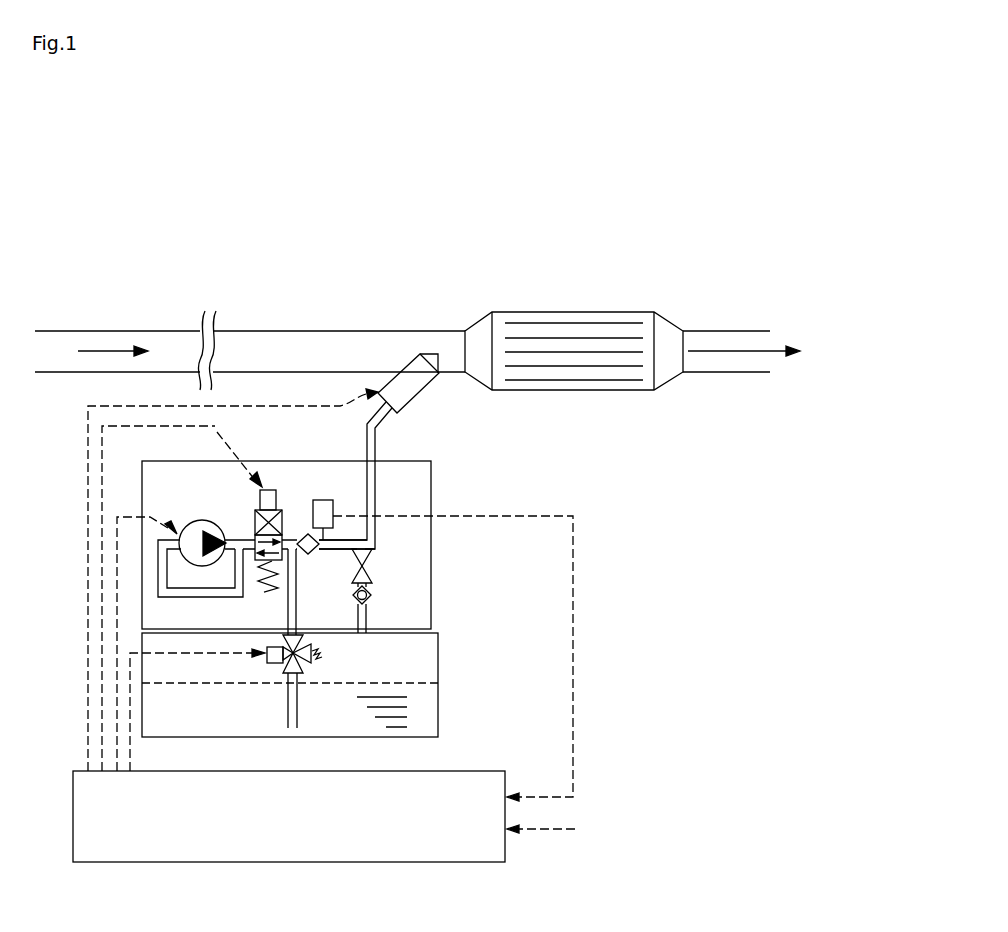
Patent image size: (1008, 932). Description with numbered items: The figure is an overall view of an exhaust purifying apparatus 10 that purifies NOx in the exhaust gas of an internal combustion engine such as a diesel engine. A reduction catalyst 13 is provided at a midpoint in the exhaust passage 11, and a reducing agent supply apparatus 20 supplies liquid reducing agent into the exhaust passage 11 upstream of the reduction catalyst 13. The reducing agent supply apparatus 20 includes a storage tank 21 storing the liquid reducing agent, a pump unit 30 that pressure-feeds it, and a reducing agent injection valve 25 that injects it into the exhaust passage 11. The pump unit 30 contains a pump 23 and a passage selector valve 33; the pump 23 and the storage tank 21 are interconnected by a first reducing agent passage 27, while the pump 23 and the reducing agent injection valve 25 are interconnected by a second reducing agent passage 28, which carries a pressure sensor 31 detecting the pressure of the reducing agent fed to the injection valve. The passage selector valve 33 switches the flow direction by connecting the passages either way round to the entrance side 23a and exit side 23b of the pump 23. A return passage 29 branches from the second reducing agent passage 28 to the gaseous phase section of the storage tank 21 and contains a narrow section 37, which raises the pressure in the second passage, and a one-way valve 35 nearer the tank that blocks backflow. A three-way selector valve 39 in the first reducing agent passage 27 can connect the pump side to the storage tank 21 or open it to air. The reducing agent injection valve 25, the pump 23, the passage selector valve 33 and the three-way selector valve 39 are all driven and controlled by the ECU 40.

The exhaust purifying apparatus 10 is at (666, 206).
The exhaust passage 11 is at (341, 331).
The reduction catalyst 13 is at (578, 320).
The reducing agent supply apparatus 20 is at (553, 451).
The storage tank 21 is at (438, 705).
The pump 23 is at (205, 520).
The entrance side of the pump 23a is at (233, 600).
The exit side of the pump 23b is at (246, 538).
The reducing agent injection valve 25 is at (418, 381).
The first reducing agent passage 27 is at (297, 585).
The second reducing agent passage 28 is at (378, 486).
The return passage 29 is at (369, 617).
The pump unit 30 is at (432, 461).
The pressure sensor 31 is at (323, 500).
The passage selector valve 33 is at (268, 490).
The one-way valve 35 is at (374, 594).
The narrow section 37 is at (374, 564).
The three-way selector valve 39 is at (283, 641).
The ECU 40 is at (487, 771).